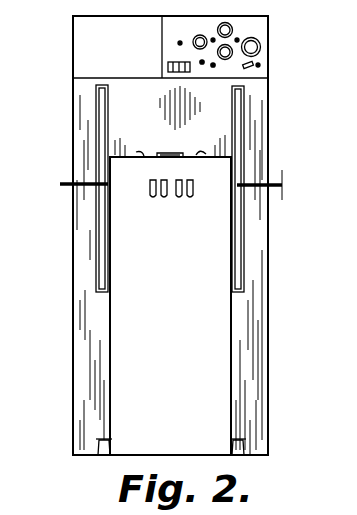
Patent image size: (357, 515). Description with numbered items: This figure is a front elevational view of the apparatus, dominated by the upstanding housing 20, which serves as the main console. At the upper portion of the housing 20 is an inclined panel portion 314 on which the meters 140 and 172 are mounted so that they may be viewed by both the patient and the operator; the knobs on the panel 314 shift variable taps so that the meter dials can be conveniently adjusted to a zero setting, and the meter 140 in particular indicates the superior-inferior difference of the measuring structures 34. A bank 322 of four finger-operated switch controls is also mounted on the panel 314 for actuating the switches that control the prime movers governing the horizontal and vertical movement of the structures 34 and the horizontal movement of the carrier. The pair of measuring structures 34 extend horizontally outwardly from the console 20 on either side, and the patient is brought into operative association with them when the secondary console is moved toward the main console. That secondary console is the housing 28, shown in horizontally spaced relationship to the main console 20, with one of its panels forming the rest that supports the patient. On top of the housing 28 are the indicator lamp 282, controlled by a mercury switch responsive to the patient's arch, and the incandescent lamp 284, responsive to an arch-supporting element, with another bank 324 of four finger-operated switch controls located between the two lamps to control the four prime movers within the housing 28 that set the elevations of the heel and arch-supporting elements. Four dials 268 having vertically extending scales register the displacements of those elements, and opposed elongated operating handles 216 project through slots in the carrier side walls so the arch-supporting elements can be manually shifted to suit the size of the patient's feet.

The housing 20 is at (78, 20).
The inclined panel portion 314 is at (192, 12).
The meter 172 is at (231, 26).
The meter 140 is at (261, 45).
The bank of finger-operated switch controls 322 is at (167, 66).
The incandescent lamp 284 is at (140, 155).
The indicator lamp 282 is at (198, 155).
The measuring structures 34 is at (66, 181).
The housing 28 is at (234, 377).
The bank of finger-operated switch controls 324 is at (168, 158).
The dials 268 is at (190, 199).
The operating handles 216 is at (101, 446).